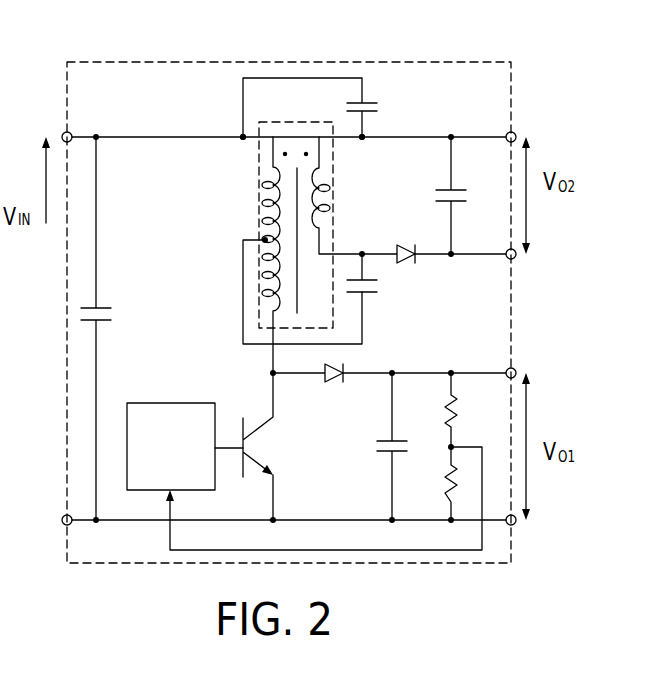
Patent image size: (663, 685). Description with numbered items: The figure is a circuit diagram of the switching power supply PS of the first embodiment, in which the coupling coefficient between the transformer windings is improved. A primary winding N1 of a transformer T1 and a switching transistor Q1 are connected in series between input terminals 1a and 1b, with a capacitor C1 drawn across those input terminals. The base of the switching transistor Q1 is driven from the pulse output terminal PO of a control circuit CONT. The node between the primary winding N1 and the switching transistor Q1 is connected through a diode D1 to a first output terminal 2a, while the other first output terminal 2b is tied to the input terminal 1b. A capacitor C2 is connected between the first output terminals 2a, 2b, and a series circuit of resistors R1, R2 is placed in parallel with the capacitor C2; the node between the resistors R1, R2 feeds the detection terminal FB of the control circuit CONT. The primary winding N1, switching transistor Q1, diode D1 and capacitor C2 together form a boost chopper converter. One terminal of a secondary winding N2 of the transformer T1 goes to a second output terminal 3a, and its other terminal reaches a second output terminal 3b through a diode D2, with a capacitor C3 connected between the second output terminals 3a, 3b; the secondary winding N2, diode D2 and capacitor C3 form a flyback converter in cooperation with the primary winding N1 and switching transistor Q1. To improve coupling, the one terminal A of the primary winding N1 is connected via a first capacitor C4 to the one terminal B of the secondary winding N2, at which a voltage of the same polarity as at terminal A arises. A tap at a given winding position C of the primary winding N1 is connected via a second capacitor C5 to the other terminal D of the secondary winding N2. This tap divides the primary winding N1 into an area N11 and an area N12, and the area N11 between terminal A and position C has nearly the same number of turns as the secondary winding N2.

The switching power supply PS is at (483, 62).
The input terminal 1a is at (62, 136).
The input terminal 1b is at (62, 519).
The first output terminal 2a is at (515, 368).
The first output terminal 2b is at (515, 525).
The second output terminal 3a is at (515, 132).
The second output terminal 3b is at (515, 259).
The capacitor C1 is at (106, 328).
The capacitor C2 is at (381, 446).
The capacitor C3 is at (463, 195).
The first capacitor C4 is at (327, 107).
The second capacitor C5 is at (376, 291).
The diode D1 is at (388, 391).
The diode D2 is at (434, 273).
The resistor R1 is at (432, 410).
The resistor R2 is at (432, 482).
The switching transistor Q1 is at (276, 446).
The transformer T1 is at (285, 122).
The primary winding N1 is at (244, 255).
The area of primary winding N11 is at (205, 212).
The area of primary winding N12 is at (268, 290).
The secondary winding N2 is at (339, 195).
The control circuit CONT is at (185, 421).
The pulse output terminal PO is at (183, 434).
The detection terminal FB is at (162, 472).
The one terminal of primary winding A is at (242, 135).
The one terminal of secondary winding B is at (365, 141).
The winding position of tap C is at (262, 251).
The other terminal of secondary winding D is at (365, 249).